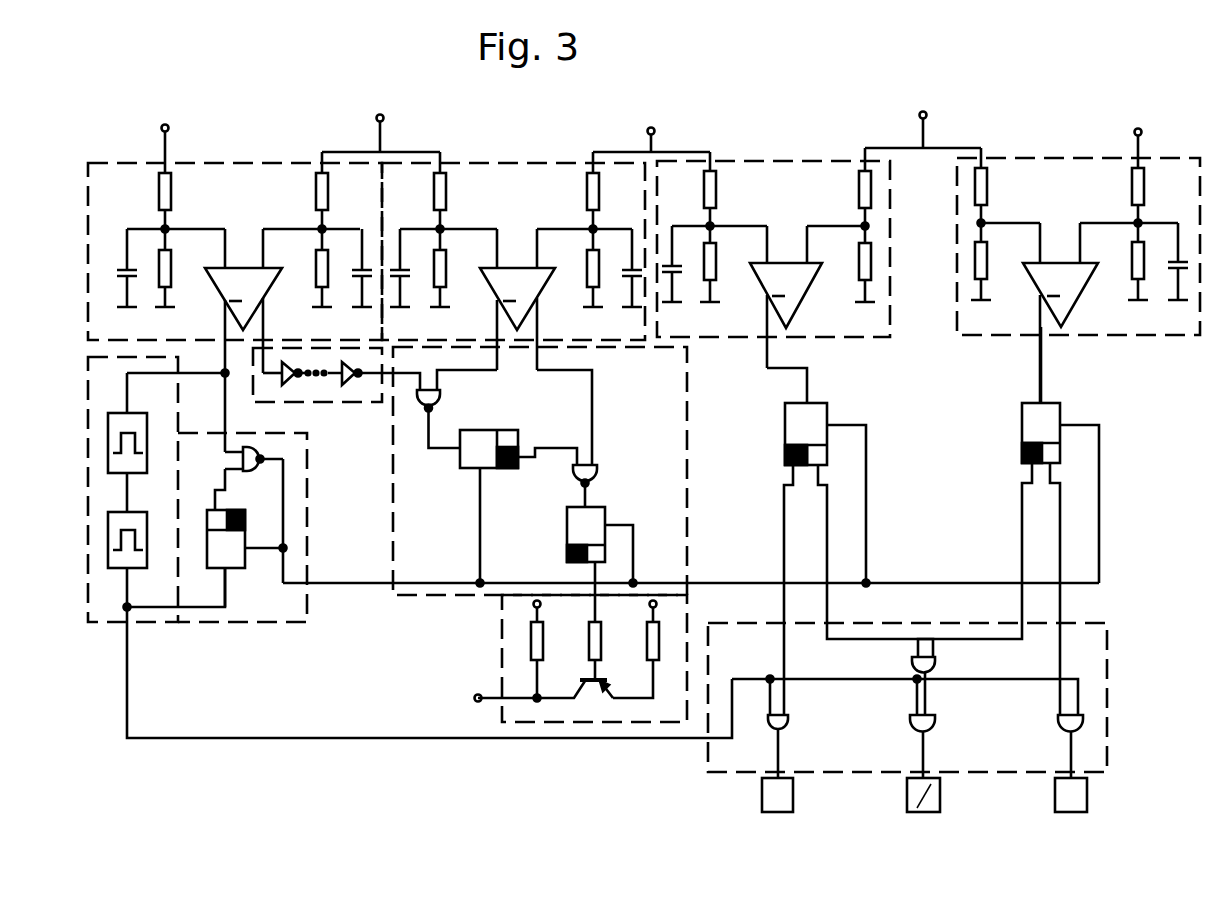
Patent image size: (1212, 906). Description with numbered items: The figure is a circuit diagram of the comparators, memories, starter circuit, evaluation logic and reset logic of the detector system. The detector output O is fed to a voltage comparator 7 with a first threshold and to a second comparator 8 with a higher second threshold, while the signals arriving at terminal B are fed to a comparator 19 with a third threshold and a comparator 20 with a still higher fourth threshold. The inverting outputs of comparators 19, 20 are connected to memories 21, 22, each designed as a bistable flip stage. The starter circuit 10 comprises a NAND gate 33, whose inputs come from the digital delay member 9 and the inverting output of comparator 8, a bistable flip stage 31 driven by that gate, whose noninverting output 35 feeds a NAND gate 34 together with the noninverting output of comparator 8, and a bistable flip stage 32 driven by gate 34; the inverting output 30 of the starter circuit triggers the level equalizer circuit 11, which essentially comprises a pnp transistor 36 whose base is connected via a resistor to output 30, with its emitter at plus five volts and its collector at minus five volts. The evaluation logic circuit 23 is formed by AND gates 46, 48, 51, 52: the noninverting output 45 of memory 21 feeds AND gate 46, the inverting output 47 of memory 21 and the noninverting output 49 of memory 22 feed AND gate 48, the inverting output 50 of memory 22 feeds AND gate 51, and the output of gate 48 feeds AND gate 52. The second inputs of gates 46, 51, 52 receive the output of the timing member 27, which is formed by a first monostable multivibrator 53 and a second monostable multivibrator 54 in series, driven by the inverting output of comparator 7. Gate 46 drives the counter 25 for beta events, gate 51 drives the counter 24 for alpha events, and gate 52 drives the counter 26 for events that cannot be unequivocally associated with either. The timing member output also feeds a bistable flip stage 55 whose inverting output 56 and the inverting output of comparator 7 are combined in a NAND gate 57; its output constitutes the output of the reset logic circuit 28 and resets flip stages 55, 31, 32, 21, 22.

The voltage comparator 7 is at (102, 323).
The second comparator 8 is at (610, 341).
The digital delay member 9 is at (325, 403).
The starter circuit 10 is at (413, 576).
The level equalizer circuit 11 is at (555, 721).
The comparator 19 is at (737, 338).
The comparator 20 is at (1110, 336).
The memory 21 is at (812, 421).
The memory 22 is at (1050, 419).
The evaluation logic circuit 23 is at (1093, 664).
The counter 24 is at (1087, 793).
The counter 25 is at (793, 793).
The counter 26 is at (940, 793).
The timing member 27 is at (158, 614).
The reset logic circuit 28 is at (243, 608).
The output 30 is at (594, 569).
The bistable flip stage 31 is at (473, 459).
The bistable flip stage 32 is at (578, 521).
The NAND gate 33 is at (427, 405).
The NAND gate 34 is at (572, 474).
The noninverting output 35 is at (530, 450).
The pnp transistor 36 is at (595, 691).
The noninverting output 45 is at (790, 474).
The AND gate 46 is at (768, 729).
The inverting output 47 is at (821, 474).
The AND gate 48 is at (912, 664).
The noninverting output 49 is at (1028, 469).
The inverting output 50 is at (1057, 473).
The AND gate 51 is at (1060, 723).
The AND gate 52 is at (918, 733).
The first monostable multivibrator 53 is at (115, 412).
The second monostable multivibrator 54 is at (117, 569).
The bistable flip stage 55 is at (235, 558).
The inverting output 56 is at (220, 506).
The NAND gate 57 is at (256, 451).